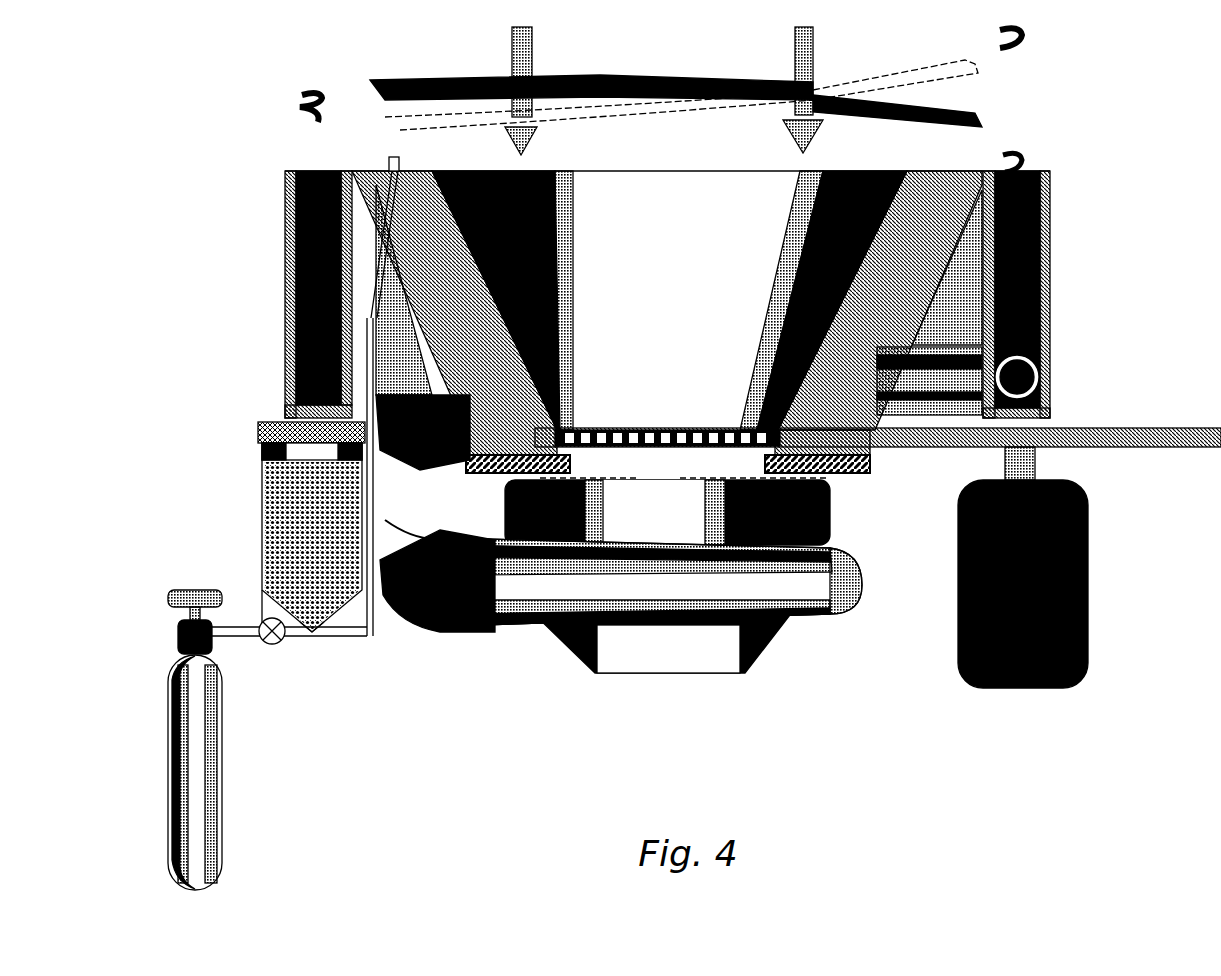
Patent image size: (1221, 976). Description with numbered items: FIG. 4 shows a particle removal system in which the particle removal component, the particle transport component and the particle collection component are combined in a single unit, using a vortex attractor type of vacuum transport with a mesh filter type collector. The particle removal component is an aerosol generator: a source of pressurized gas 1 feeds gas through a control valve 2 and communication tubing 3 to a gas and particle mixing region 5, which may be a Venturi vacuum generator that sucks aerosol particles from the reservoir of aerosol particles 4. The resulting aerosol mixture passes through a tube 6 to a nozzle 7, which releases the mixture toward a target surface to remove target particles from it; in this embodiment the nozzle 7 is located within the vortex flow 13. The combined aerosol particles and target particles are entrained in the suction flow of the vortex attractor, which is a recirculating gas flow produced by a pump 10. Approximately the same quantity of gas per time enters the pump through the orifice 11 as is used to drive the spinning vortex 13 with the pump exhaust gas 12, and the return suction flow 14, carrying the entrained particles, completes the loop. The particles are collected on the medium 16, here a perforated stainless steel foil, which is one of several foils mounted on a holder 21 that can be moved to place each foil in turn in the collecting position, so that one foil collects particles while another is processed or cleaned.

The source of pressurized gas 1 is at (168, 726).
The control valve 2 is at (273, 645).
The communication tubing 3 is at (251, 627).
The reservoir of aerosol particles 4 is at (262, 512).
The gas and particle mixing region 5 is at (312, 636).
The tube 6 is at (352, 636).
The nozzle 7 is at (396, 157).
The pump 10 is at (672, 673).
The orifice 11 is at (661, 478).
The pump exhaust gas 12 is at (478, 636).
The vortex flow 13 is at (300, 108).
The return suction flow 14 is at (532, 62).
The medium 16 is at (700, 430).
The holder 21 is at (1115, 428).